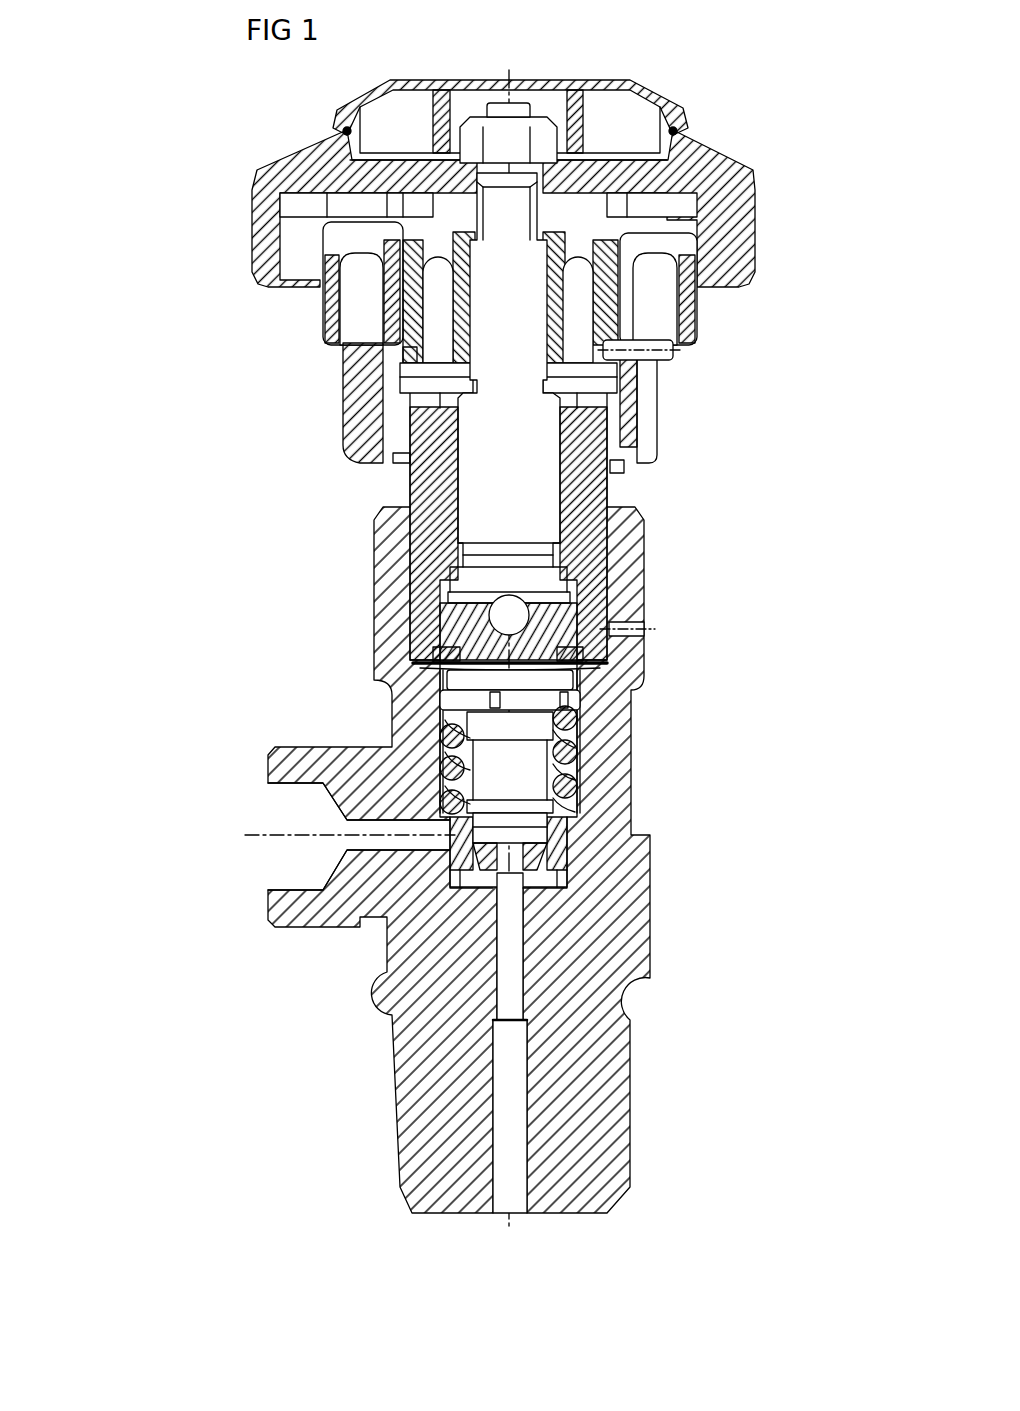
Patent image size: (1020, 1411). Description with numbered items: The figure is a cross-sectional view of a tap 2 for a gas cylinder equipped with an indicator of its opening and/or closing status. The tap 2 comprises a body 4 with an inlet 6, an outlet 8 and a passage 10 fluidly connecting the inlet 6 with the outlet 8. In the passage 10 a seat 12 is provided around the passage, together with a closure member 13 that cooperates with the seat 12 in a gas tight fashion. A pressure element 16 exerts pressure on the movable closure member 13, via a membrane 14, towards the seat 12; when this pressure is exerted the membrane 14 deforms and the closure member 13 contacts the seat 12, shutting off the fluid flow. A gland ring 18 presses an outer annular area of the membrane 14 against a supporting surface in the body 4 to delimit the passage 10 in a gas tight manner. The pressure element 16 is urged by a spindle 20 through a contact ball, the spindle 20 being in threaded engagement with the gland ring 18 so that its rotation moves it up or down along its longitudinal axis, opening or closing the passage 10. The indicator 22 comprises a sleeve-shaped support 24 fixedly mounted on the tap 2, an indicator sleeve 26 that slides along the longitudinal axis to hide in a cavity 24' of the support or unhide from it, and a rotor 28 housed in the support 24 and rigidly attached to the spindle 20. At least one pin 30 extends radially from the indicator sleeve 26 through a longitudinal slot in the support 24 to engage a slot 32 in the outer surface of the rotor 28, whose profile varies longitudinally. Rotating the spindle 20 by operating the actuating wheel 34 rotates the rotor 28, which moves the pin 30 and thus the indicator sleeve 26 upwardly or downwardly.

The tap 2 is at (113, 250).
The body 4 is at (403, 773).
The inlet 6 is at (513, 1197).
The outlet 8 is at (282, 822).
The passage 10 is at (507, 950).
The seat 12 is at (537, 880).
The closure member 13 is at (530, 753).
The membrane 14 is at (573, 670).
The pressure element 16 is at (567, 620).
The gland ring 18 is at (593, 560).
The spindle 20 is at (473, 512).
The indicator 22 is at (808, 350).
The sleeve-shaped support 24 is at (559, 360).
The cavity of the support 24' is at (564, 283).
The indicator sleeve 26 is at (647, 437).
The rotor 28 is at (413, 312).
The pin 30 is at (670, 357).
The slot 32 is at (417, 347).
The actuating wheel 34 is at (262, 202).